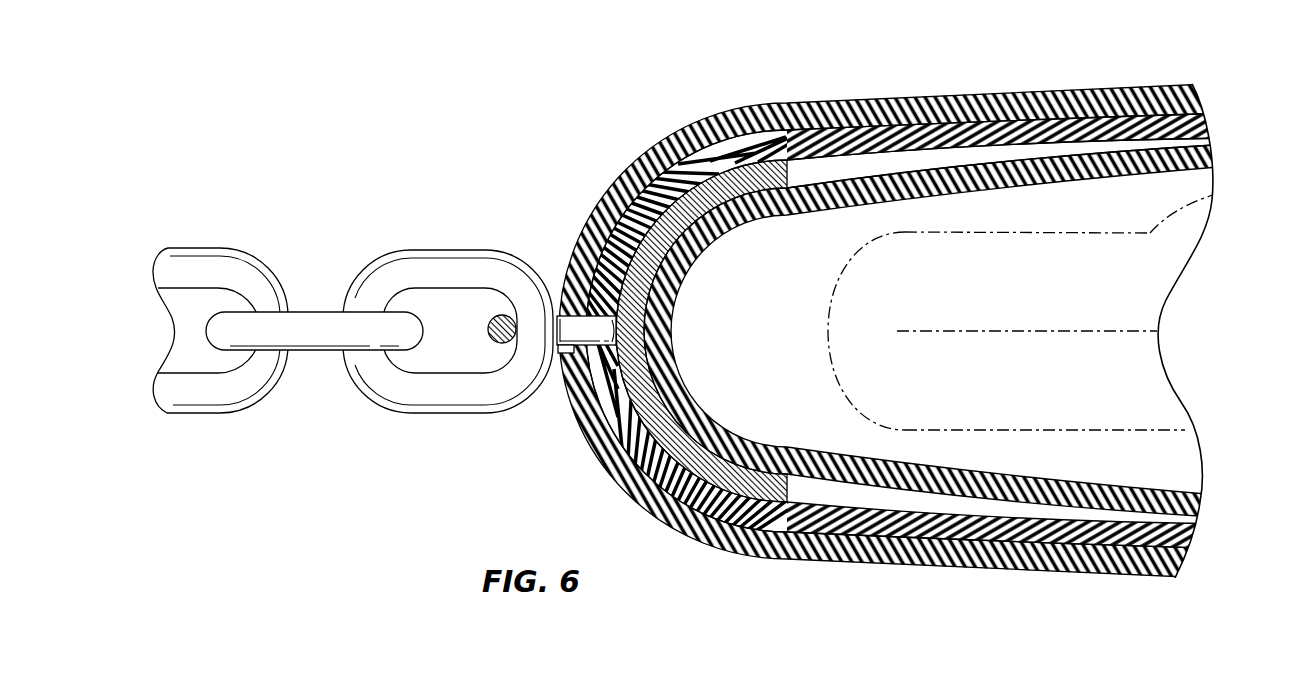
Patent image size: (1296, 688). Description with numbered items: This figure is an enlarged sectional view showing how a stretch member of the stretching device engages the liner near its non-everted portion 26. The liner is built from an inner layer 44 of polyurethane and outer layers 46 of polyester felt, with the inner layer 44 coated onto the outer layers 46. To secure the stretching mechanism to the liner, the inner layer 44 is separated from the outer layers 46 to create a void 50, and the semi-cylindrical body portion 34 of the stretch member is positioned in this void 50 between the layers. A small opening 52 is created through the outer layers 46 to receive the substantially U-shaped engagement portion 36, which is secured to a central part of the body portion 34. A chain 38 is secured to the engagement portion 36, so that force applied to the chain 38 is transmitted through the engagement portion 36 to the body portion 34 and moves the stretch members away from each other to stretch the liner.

The non-everted portion 26 is at (1213, 195).
The body portion 34 is at (690, 207).
The engagement portion 36 is at (578, 326).
The chain 38 is at (446, 250).
The inner layer 44 is at (1007, 172).
The outer layers 46 is at (900, 115).
The void 50 is at (816, 173).
The small opening 52 is at (565, 350).